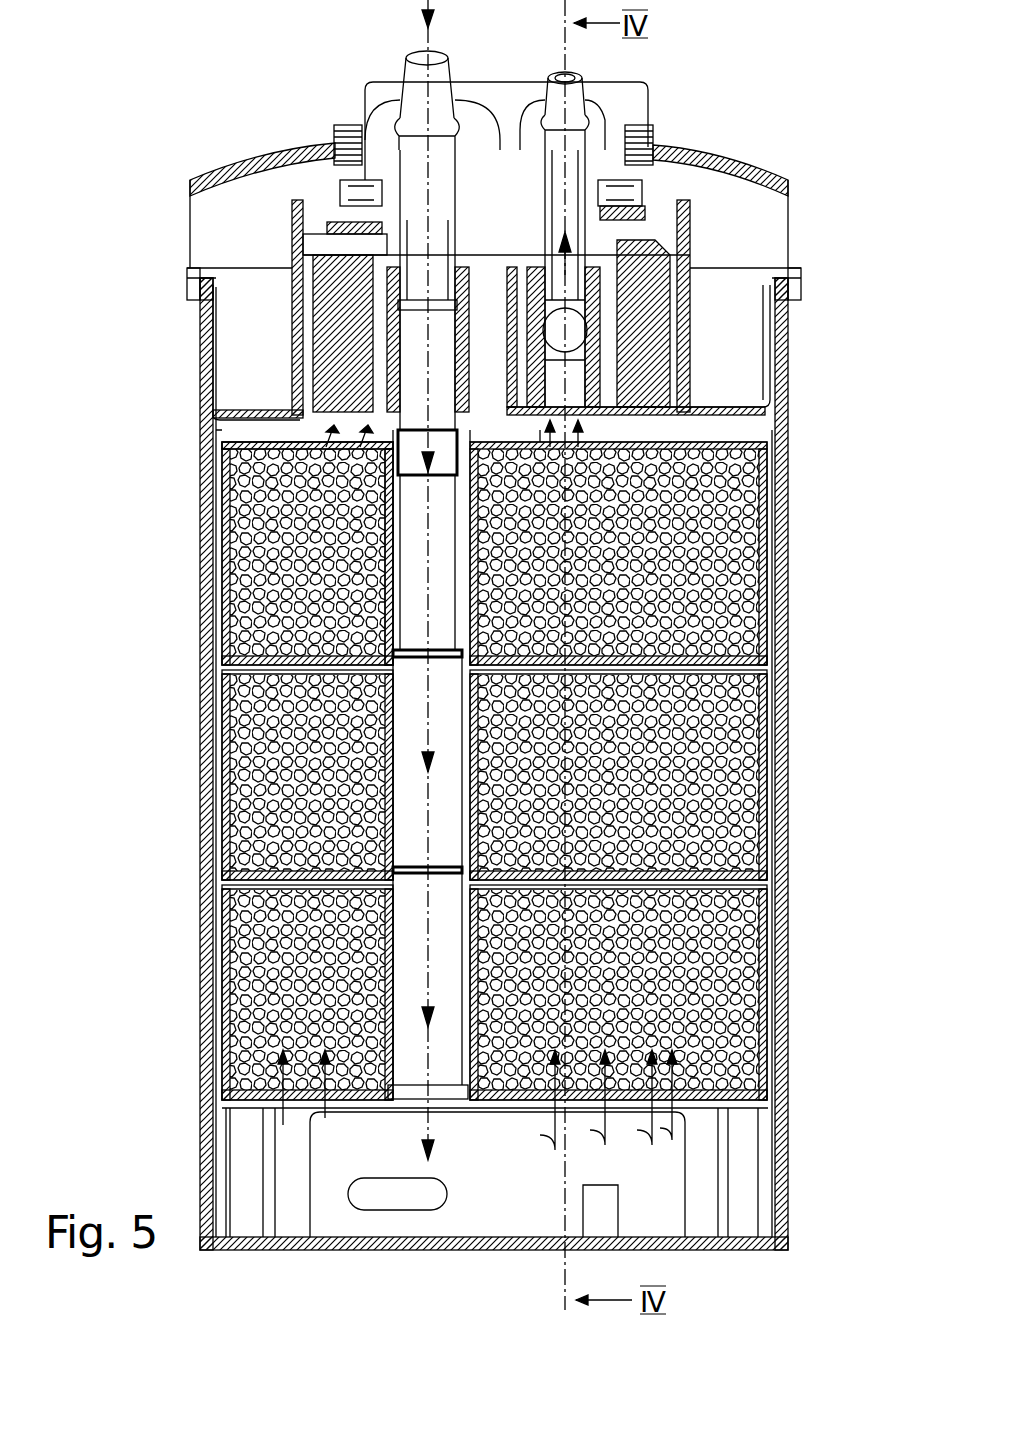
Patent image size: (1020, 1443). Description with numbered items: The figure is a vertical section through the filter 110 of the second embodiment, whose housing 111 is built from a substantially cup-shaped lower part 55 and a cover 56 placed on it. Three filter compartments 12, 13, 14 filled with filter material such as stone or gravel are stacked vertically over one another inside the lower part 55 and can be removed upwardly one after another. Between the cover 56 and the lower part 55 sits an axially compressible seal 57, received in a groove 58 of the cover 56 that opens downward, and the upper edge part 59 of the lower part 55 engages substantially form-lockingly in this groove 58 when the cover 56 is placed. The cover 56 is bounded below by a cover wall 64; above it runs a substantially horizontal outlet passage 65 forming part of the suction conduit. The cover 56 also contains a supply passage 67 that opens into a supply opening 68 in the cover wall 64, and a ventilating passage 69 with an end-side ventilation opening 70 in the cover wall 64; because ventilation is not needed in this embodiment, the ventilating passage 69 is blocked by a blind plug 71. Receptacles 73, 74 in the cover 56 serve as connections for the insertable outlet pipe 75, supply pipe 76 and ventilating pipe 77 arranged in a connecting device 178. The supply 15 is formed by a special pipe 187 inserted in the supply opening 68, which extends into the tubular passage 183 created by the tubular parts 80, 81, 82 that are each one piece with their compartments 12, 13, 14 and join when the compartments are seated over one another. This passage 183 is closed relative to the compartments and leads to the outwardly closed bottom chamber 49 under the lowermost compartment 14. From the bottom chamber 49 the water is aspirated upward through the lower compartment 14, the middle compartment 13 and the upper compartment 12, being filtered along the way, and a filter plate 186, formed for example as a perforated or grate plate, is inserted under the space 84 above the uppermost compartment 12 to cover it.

The filter compartment 12 is at (727, 577).
The filter compartment 13 is at (758, 740).
The filter compartment 14 is at (760, 960).
The supply 15 is at (428, 382).
The bottom chamber 49 is at (250, 1200).
The lower part 55 is at (785, 610).
The cover 56 is at (715, 212).
The seal 57 is at (797, 283).
The groove 58 is at (197, 283).
The upper edge part 59 is at (792, 300).
The cover wall 64 is at (703, 427).
The outlet passage 65 is at (600, 312).
The supply passage 67 is at (400, 316).
The supply opening 68 is at (395, 418).
The ventilating passage 69 is at (400, 345).
The ventilation opening 70 is at (400, 563).
The blind plug 71 is at (490, 135).
The receptacle 73 is at (380, 300).
The receptacle 74 is at (400, 205).
The outlet pipe 75 is at (662, 218).
The supply pipe 76 is at (335, 258).
The ventilating pipe 77 is at (378, 168).
The tubular part 80 is at (390, 665).
The tubular part 81 is at (230, 835).
The tubular part 82 is at (240, 1015).
The space 84 is at (542, 442).
The filter 110 is at (795, 678).
The housing 111 is at (786, 782).
The connecting device 178 is at (638, 100).
The passage 183 is at (393, 590).
The filter plate 186 is at (747, 438).
The pipe 187 is at (470, 507).